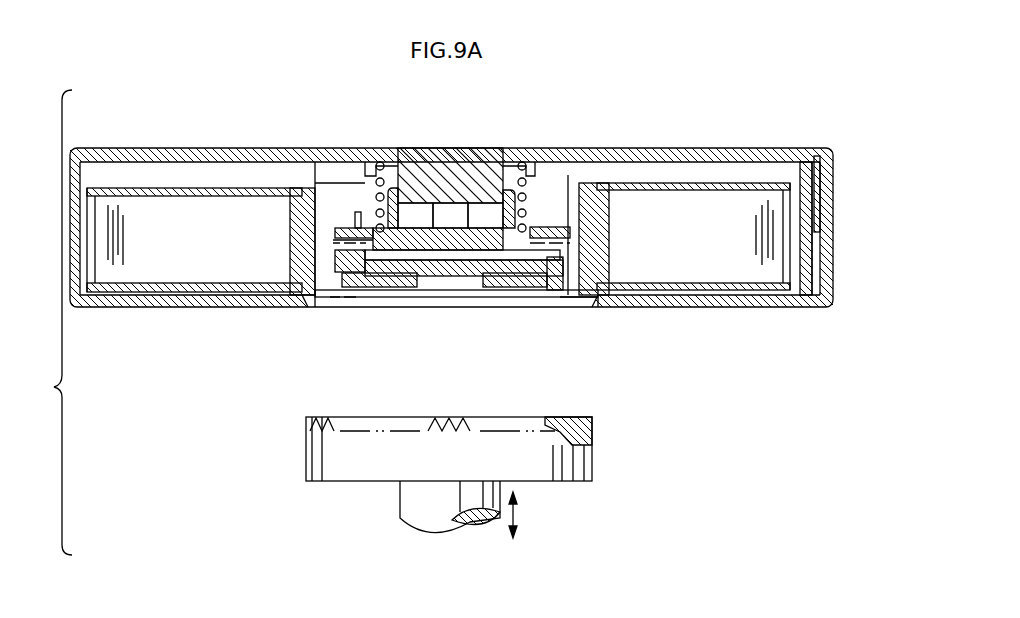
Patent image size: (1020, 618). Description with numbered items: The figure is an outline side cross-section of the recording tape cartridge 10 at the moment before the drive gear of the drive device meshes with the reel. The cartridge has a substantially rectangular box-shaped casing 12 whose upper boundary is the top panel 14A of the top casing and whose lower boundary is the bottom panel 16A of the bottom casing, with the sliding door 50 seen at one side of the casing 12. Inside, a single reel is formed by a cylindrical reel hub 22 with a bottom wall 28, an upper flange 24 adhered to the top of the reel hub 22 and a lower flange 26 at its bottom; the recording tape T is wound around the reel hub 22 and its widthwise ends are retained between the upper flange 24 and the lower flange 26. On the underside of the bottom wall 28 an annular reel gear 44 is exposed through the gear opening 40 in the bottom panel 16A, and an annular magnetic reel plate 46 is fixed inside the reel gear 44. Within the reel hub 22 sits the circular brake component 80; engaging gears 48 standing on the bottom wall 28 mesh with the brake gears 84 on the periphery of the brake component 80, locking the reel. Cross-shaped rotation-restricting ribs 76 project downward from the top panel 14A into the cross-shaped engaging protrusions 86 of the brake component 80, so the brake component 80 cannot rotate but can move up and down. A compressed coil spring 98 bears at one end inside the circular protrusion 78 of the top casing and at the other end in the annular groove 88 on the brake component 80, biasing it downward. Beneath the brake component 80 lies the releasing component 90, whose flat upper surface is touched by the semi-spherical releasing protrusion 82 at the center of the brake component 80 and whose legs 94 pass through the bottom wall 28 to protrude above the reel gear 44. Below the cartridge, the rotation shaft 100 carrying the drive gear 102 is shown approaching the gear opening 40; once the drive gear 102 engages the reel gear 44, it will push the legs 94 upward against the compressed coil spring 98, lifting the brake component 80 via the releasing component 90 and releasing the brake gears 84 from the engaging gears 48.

The recording tape cartridge 10 is at (797, 122).
The casing 12 is at (835, 256).
The top panel 14A is at (665, 150).
The bottom panel 16A is at (668, 307).
The reel hub 22 is at (612, 226).
The upper flange 24 is at (172, 188).
The lower flange 26 is at (160, 292).
The bottom wall 28 is at (452, 290).
The gear opening 40 is at (304, 301).
The reel gear 44 is at (325, 298).
The reel plate 46 is at (510, 290).
The engaging gears 48 is at (336, 239).
The door 50 is at (818, 180).
The rotation-restricting ribs 76 is at (487, 186).
The circular protrusion 78 is at (535, 190).
The brake component 80 is at (339, 222).
The releasing protrusion 82 is at (445, 268).
The brake gears 84 is at (545, 292).
The engaging protrusions 86 is at (508, 200).
The annular groove 88 is at (545, 198).
The releasing component 90 is at (574, 226).
The legs 94 is at (560, 300).
The compressed coil spring 98 is at (386, 166).
The rotation shaft 100 is at (398, 500).
The drive gear 102 is at (566, 418).
The recording tape T is at (818, 210).